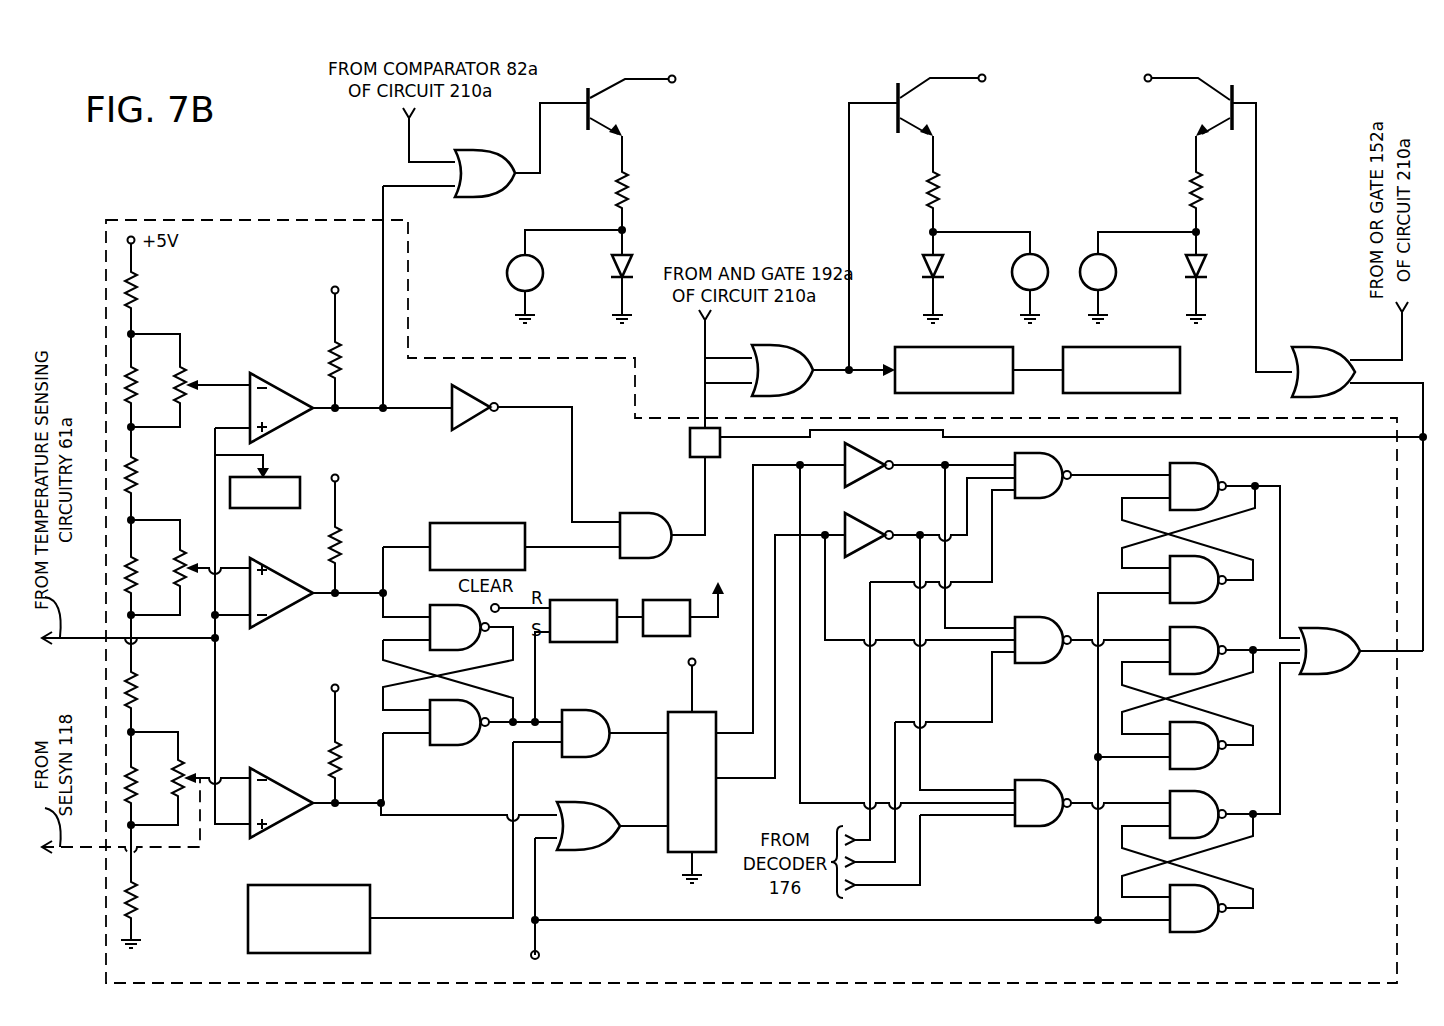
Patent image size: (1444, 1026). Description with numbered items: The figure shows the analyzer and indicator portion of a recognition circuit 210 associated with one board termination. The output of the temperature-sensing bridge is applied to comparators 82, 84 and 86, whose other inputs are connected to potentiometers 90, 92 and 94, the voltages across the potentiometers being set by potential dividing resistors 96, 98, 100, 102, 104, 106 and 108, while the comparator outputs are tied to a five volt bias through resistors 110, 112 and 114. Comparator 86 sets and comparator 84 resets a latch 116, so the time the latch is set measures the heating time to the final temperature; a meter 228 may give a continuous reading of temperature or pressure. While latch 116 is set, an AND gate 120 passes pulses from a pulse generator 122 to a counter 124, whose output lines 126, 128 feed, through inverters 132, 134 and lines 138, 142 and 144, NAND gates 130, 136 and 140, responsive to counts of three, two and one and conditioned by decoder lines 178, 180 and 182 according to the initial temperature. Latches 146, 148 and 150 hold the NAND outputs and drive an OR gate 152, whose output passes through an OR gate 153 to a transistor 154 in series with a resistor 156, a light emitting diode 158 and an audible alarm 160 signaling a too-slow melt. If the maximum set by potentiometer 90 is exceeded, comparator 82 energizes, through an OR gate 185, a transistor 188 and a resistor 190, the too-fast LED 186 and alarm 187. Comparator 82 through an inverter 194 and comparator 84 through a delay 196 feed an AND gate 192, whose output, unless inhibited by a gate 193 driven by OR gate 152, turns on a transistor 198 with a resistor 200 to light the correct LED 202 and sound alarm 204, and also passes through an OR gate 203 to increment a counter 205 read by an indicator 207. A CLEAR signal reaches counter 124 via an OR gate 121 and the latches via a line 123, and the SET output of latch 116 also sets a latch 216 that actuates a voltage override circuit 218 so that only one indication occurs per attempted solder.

The comparator 82 is at (282, 395).
The comparator 84 is at (280, 580).
The comparator 86 is at (280, 790).
The potentiometer 90 is at (192, 372).
The potentiometer 92 is at (188, 540).
The potentiometer 94 is at (188, 752).
The potential dividing resistor 96 is at (140, 292).
The potential dividing resistor 98 is at (140, 380).
The potential dividing resistor 100 is at (140, 475).
The potential dividing resistor 102 is at (140, 570).
The potential dividing resistor 104 is at (140, 683).
The potential dividing resistor 106 is at (140, 783).
The potential dividing resistor 108 is at (140, 896).
The resistor 110 is at (342, 355).
The resistor 112 is at (342, 548).
The resistor 114 is at (342, 762).
The latch 116 is at (450, 752).
The AND gate 120 is at (586, 712).
The OR gate 121 is at (590, 850).
The pulse generator 122 is at (352, 885).
The line 123 is at (885, 921).
The counter 124 is at (675, 720).
The output line 126 is at (752, 515).
The output line 128 is at (735, 775).
The NAND gate 130 is at (1050, 485).
The inverter 132 is at (858, 478).
The inverter 134 is at (858, 535).
The NAND gate 136 is at (1030, 632).
The line 138 is at (848, 641).
The NAND gate 140 is at (1035, 790).
The line 142 is at (921, 675).
The line 144 is at (830, 800).
The latch 146 is at (1282, 469).
The latch 148 is at (1265, 619).
The latch 150 is at (1260, 787).
The OR gate 152 is at (1322, 640).
The OR gate 153 is at (1320, 352).
The transistor 154 is at (1222, 112).
The resistor 156 is at (1188, 188).
The light emitting diode 158 is at (1208, 268).
The audible alarm 160 is at (1110, 280).
The line 178 is at (992, 528).
The line 180 is at (992, 690).
The line 182 is at (930, 858).
The OR gate 185 is at (478, 195).
The light emitting diode 186 is at (628, 258).
The alarm 187 is at (507, 276).
The transistor 188 is at (605, 112).
The resistor 190 is at (630, 184).
The AND gate 192 is at (640, 528).
The gate 193 is at (690, 443).
The inverter 194 is at (475, 405).
The delay 196 is at (476, 525).
The transistor 198 is at (922, 115).
The resistor 200 is at (942, 182).
The light emitting diode 202 is at (922, 262).
The OR gate 203 is at (805, 378).
The alarm 204 is at (1012, 278).
The counter 205 is at (980, 352).
The indicator 207 is at (1180, 380).
The recognition circuit 210 is at (232, 220).
The latch 216 is at (582, 600).
The voltage override circuit 218 is at (665, 636).
The meter 228 is at (252, 508).